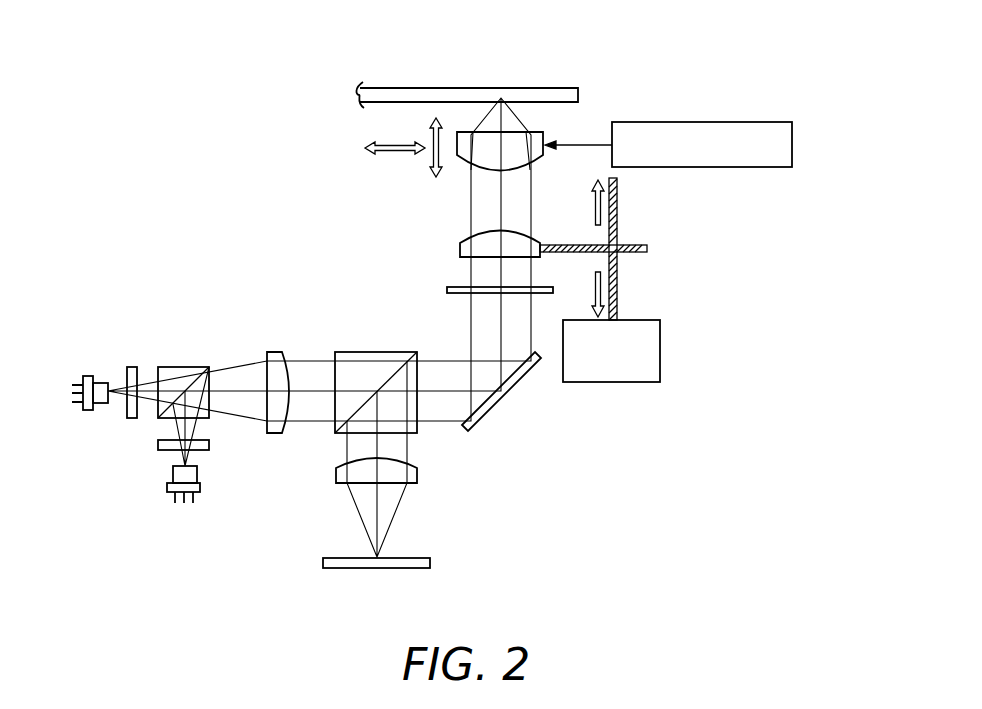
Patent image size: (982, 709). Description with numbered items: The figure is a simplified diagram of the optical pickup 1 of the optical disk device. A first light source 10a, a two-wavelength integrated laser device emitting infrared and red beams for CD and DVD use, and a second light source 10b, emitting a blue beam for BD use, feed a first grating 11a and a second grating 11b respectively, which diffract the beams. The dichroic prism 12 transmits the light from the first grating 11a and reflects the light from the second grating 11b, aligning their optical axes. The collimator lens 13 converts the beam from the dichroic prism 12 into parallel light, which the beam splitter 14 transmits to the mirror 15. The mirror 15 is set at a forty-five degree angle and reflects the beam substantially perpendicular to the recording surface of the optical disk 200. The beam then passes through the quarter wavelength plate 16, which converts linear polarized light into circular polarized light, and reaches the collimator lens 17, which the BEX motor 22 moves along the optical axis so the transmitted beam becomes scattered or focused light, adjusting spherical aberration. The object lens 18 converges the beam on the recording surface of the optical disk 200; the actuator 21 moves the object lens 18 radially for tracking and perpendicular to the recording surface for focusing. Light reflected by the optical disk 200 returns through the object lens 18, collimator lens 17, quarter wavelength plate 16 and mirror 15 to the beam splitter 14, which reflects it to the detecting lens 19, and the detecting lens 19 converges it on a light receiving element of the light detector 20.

The optical pickup 1 is at (215, 152).
The first light source 10a is at (90, 376).
The second light source 10b is at (167, 487).
The first grating 11a is at (132, 367).
The second grating 11b is at (158, 445).
The dichroic prism 12 is at (194, 367).
The collimator lens 13 is at (280, 352).
The beam splitter 14 is at (372, 352).
The mirror 15 is at (506, 399).
The quarter wavelength plate 16 is at (447, 290).
The collimator lens 17 is at (460, 250).
The object lens 18 is at (462, 160).
The detecting lens 19 is at (336, 474).
The light detector 20 is at (323, 563).
The actuator 21 is at (750, 122).
The BEX motor 22 is at (650, 320).
The optical disk 200 is at (557, 88).